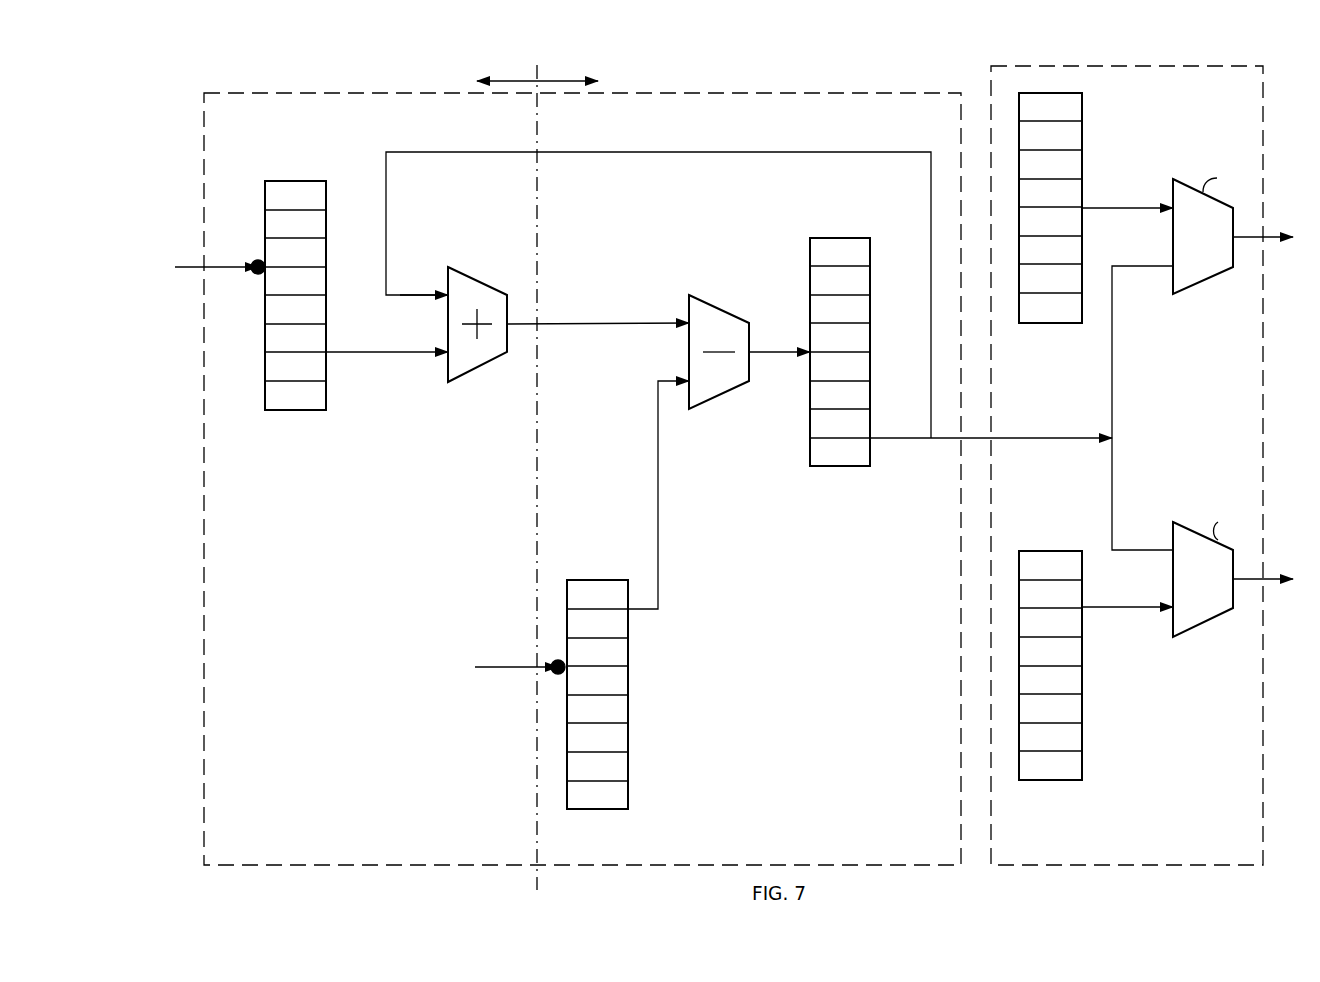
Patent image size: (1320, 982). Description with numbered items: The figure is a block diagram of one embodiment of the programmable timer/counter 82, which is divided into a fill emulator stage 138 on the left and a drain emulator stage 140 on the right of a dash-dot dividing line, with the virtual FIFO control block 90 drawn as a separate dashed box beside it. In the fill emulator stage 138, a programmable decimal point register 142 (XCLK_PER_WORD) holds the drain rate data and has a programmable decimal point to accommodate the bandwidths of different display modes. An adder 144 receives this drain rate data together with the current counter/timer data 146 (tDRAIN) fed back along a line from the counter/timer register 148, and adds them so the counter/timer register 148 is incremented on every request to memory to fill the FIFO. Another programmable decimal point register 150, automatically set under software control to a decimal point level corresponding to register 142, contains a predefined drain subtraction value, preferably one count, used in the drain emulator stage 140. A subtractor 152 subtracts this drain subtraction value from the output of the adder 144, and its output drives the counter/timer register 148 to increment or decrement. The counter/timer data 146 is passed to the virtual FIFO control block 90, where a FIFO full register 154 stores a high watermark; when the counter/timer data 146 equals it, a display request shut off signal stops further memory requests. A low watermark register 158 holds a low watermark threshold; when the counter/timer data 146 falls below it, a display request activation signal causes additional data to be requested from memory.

The programmable timer/counter 82 is at (752, 90).
The virtual FIFO control block 90 is at (1266, 165).
The fill emulator stage 138 is at (483, 68).
The drain emulator stage 140 is at (591, 71).
The programmable decimal point register 142 is at (295, 181).
The adder 144 is at (462, 266).
The current counter/timer data 146 is at (657, 152).
The counter/timer register 148 is at (840, 238).
The programmable decimal point register 150 is at (628, 695).
The subtractor 152 is at (718, 323).
The FIFO full register 154 is at (1082, 165).
The low watermark register 158 is at (1082, 666).